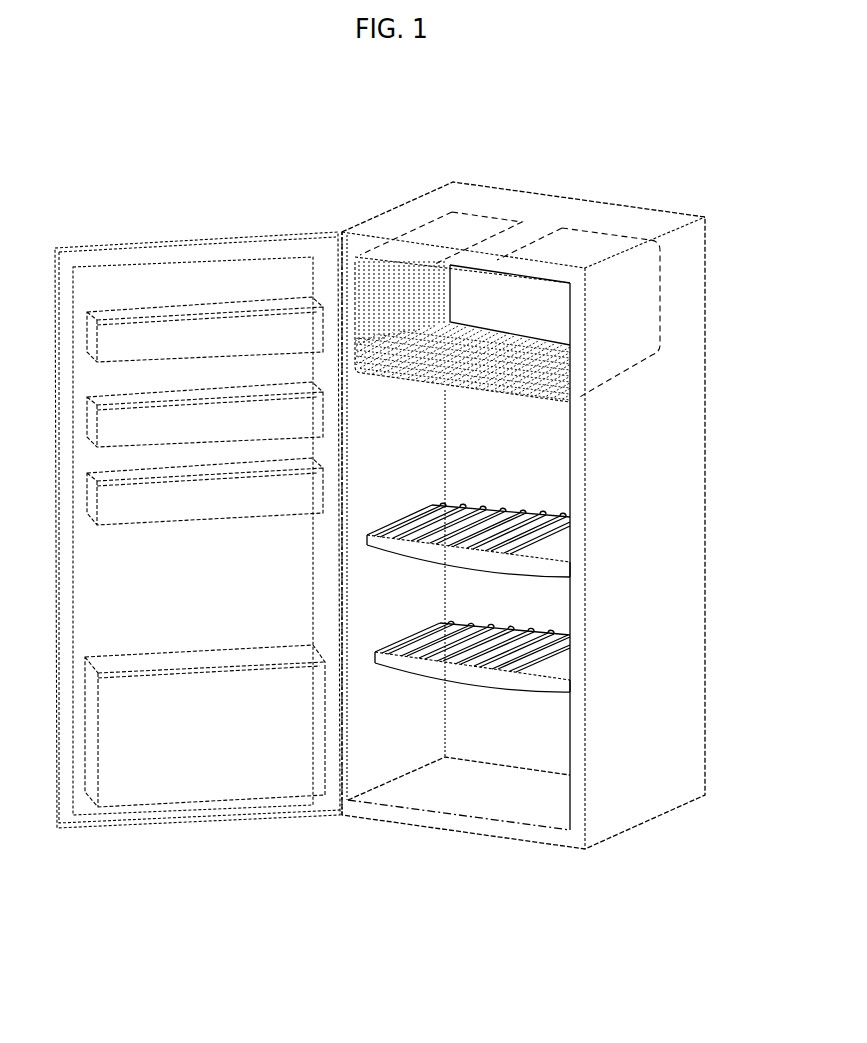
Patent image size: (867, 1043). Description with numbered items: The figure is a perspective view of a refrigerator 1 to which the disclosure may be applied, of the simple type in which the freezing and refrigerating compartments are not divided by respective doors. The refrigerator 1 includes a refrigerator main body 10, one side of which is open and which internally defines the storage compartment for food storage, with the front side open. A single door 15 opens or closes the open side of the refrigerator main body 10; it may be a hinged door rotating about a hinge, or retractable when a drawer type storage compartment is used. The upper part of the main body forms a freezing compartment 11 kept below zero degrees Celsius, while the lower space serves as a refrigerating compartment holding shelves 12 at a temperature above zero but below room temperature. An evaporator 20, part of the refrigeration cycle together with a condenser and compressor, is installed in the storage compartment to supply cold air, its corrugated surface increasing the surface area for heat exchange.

The refrigerator 1 is at (532, 149).
The refrigerator main body 10 is at (641, 218).
The freezing compartment 11 is at (541, 303).
The shelf 12 is at (541, 470).
The door 15 is at (229, 240).
The evaporator 20 is at (661, 271).